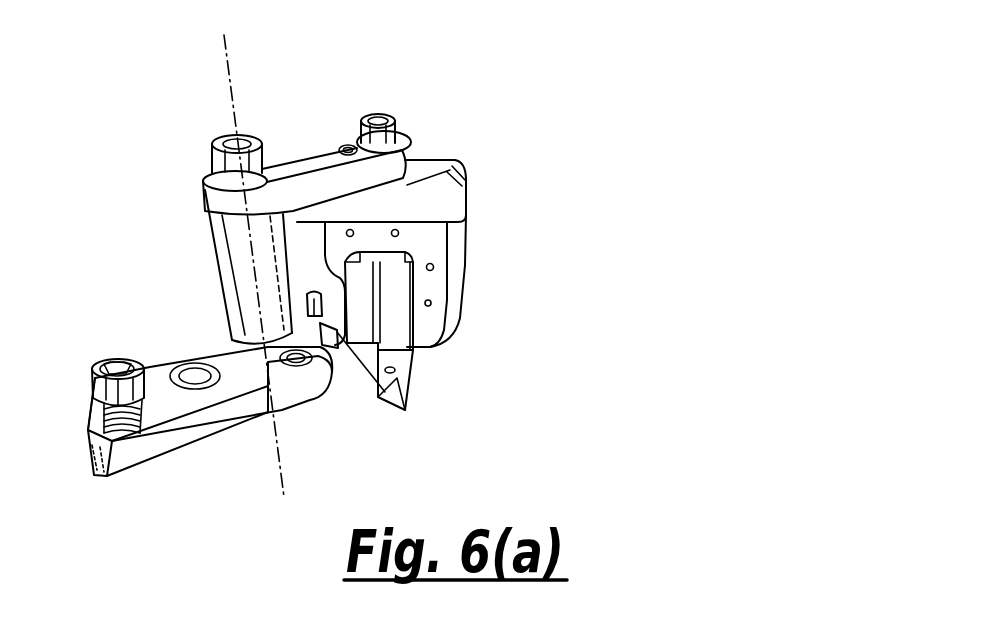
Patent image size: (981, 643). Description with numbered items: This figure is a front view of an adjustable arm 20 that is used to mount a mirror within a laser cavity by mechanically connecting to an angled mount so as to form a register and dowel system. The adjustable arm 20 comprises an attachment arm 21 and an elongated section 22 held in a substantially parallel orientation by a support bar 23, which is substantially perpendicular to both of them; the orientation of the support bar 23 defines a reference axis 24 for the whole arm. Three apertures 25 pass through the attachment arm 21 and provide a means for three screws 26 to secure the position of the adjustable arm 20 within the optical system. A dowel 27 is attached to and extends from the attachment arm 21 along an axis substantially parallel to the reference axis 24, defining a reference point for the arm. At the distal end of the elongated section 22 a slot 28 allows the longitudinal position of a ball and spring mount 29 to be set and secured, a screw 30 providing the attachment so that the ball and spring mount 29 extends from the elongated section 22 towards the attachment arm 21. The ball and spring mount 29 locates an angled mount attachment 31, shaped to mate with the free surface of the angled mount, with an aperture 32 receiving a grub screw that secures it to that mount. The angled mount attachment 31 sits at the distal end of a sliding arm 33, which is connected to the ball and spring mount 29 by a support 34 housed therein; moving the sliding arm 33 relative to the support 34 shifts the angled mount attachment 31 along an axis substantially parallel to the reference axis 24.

The adjustable arm 20 is at (596, 90).
The attachment arm 21 is at (172, 446).
The elongated section 22 is at (297, 163).
The support bar 23 is at (222, 255).
The reference axis 24 is at (224, 76).
The apertures 25 is at (190, 372).
The screws 26 is at (100, 386).
The dowel 27 is at (361, 322).
The slot 28 is at (348, 144).
The ball and spring mount 29 is at (445, 209).
The screw 30 is at (395, 130).
The angled mount attachment 31 is at (407, 396).
The aperture 32 is at (395, 372).
The sliding arm 33 is at (390, 298).
The support 34 is at (387, 392).